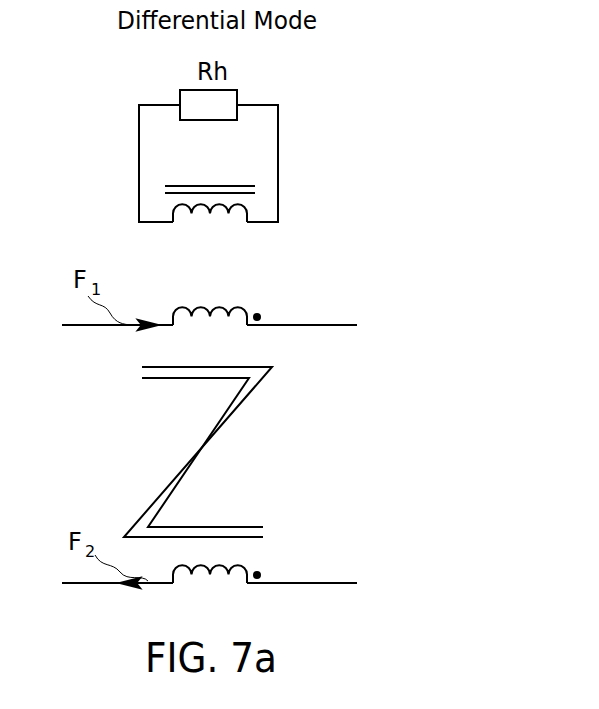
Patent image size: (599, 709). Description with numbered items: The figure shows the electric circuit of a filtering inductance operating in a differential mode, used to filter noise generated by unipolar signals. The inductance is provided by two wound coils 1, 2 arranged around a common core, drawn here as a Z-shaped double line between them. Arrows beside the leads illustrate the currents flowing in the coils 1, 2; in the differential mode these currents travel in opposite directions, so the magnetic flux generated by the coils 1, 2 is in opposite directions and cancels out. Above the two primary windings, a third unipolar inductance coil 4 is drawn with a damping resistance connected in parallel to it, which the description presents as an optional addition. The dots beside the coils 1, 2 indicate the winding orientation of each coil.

The third unipolar inductance coil 4 is at (173, 208).
The wound coil 1 is at (245, 307).
The wound coil 2 is at (247, 563).